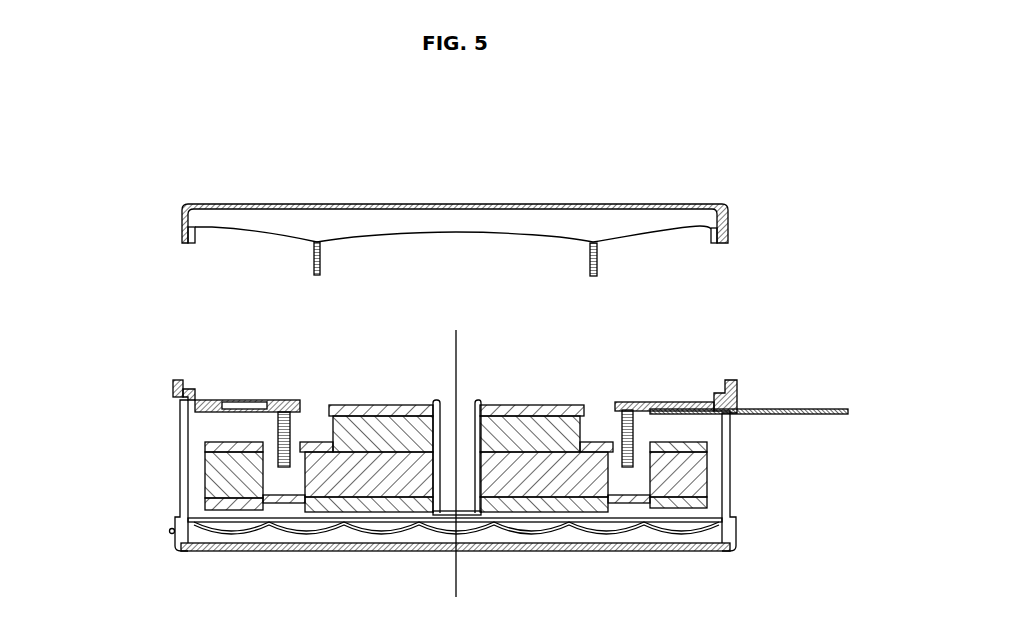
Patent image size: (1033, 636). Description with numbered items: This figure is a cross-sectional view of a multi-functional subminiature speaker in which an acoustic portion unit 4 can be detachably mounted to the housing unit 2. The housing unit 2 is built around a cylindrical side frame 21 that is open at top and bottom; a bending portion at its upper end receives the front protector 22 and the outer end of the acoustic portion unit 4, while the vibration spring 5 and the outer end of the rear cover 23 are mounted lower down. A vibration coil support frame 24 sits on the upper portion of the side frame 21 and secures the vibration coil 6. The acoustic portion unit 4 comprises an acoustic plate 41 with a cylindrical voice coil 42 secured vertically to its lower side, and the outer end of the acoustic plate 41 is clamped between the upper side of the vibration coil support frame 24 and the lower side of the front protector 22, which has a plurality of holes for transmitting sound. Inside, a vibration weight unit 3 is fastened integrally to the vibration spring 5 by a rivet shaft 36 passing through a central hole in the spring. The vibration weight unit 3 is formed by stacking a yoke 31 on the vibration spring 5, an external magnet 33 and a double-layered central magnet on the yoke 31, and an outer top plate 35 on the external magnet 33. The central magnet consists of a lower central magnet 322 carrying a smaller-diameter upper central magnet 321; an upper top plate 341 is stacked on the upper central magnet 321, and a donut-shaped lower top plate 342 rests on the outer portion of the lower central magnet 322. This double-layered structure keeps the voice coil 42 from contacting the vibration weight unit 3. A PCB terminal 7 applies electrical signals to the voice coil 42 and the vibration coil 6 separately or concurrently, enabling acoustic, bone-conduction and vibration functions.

The housing unit 2 is at (456, 467).
The vibration weight unit 3 is at (458, 457).
The acoustic portion unit 4 is at (480, 182).
The vibration spring 5 is at (290, 533).
The vibration coil 6 is at (643, 402).
The PCB terminal 7 is at (765, 408).
The side frame 21 is at (185, 488).
The front protector 22 is at (505, 205).
The rear cover 23 is at (348, 550).
The vibration coil support frame 24 is at (738, 380).
The yoke 31 is at (185, 543).
The external magnet 33 is at (685, 468).
The outer top plate 35 is at (205, 445).
The rivet shaft 36 is at (429, 436).
The acoustic plate 41 is at (400, 232).
The voice coil 42 is at (597, 258).
The upper central magnet 321 is at (552, 417).
The lower central magnet 322 is at (537, 485).
The upper top plate 341 is at (502, 410).
The lower top plate 342 is at (596, 442).